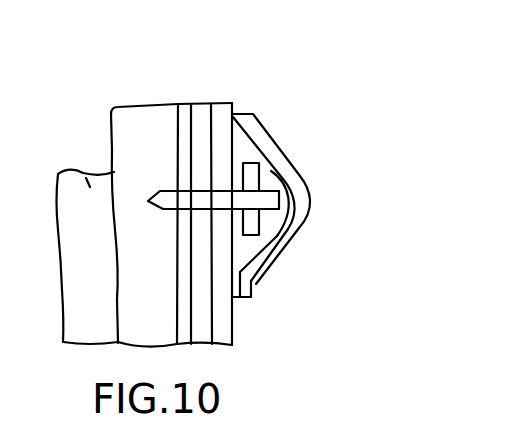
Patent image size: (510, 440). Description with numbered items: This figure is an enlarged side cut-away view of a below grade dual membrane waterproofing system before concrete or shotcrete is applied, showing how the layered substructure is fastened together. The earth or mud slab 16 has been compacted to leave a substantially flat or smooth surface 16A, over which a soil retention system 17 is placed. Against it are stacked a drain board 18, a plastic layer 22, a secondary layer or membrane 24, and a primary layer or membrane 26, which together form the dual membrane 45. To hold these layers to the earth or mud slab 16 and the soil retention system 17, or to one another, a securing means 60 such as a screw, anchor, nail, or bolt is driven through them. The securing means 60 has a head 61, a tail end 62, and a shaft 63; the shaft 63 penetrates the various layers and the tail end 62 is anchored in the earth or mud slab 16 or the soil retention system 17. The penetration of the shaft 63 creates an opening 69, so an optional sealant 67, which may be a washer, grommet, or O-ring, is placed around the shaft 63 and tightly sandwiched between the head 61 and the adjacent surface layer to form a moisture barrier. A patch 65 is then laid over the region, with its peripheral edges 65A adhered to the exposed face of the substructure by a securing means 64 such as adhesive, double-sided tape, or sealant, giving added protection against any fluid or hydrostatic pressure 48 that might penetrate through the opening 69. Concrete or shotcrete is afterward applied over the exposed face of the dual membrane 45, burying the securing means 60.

The earth or mud slab 16 is at (122, 162).
The substantially flat or smooth surface 16A is at (173, 125).
The soil retention system 17 is at (181, 111).
The drain board 18 is at (201, 117).
The plastic layer 22 is at (223, 107).
The secondary layer or membrane 24 is at (247, 120).
The primary layer or membrane 26 is at (225, 315).
The dual membrane 45 is at (223, 332).
The fluid or hydrostatic pressure 48 is at (83, 173).
The securing means 60 is at (280, 185).
The head 61 is at (298, 192).
The tail end 62 is at (163, 212).
The shaft 63 is at (219, 204).
The securing means 64 is at (284, 238).
The patch 65 is at (266, 263).
The peripheral edges 65A is at (256, 118).
The sealant 67 is at (253, 172).
The opening 69 is at (200, 183).